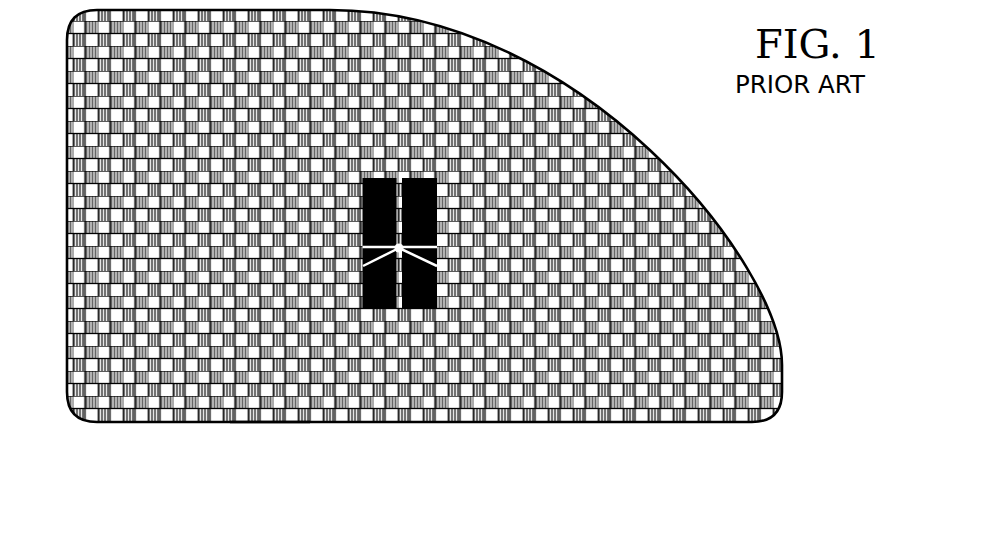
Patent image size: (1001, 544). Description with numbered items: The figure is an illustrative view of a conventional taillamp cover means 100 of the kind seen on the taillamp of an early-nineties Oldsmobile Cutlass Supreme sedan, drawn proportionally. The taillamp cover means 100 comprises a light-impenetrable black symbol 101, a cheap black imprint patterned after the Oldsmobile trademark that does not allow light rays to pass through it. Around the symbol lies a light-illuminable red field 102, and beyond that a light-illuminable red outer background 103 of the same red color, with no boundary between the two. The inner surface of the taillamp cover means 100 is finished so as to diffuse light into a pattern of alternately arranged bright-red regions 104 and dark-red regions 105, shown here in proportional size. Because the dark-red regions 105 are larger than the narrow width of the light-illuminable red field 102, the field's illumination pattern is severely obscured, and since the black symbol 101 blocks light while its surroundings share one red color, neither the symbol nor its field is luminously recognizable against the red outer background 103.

The taillamp cover means 100 is at (457, 250).
The light-impenetrable black symbol 101 is at (418, 307).
The light-illuminable red field 102 is at (405, 249).
The light-illuminable red outer background 103 is at (367, 422).
The bright-red regions 104 is at (210, 413).
The dark-red regions 105 is at (270, 413).